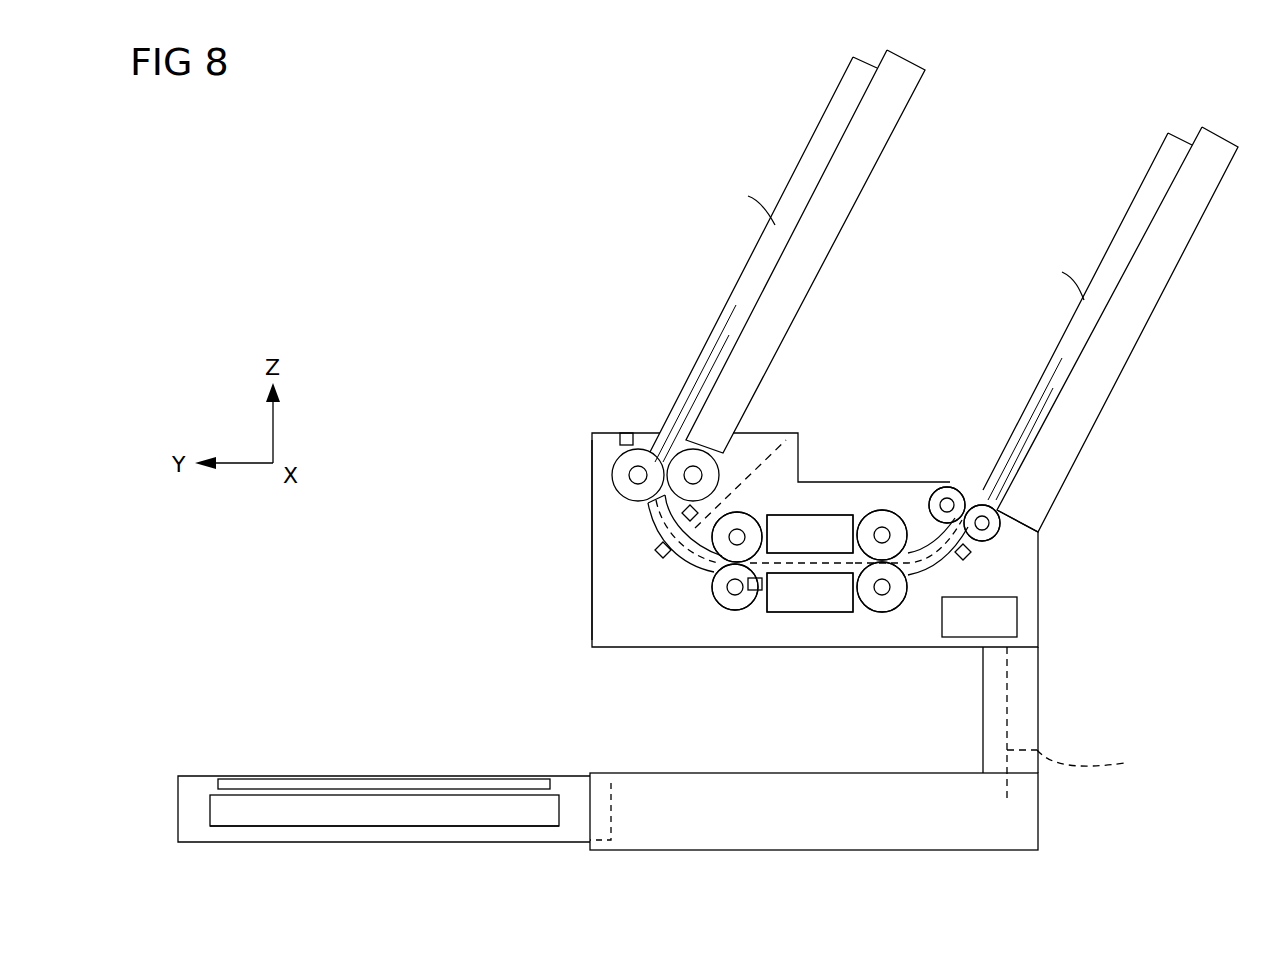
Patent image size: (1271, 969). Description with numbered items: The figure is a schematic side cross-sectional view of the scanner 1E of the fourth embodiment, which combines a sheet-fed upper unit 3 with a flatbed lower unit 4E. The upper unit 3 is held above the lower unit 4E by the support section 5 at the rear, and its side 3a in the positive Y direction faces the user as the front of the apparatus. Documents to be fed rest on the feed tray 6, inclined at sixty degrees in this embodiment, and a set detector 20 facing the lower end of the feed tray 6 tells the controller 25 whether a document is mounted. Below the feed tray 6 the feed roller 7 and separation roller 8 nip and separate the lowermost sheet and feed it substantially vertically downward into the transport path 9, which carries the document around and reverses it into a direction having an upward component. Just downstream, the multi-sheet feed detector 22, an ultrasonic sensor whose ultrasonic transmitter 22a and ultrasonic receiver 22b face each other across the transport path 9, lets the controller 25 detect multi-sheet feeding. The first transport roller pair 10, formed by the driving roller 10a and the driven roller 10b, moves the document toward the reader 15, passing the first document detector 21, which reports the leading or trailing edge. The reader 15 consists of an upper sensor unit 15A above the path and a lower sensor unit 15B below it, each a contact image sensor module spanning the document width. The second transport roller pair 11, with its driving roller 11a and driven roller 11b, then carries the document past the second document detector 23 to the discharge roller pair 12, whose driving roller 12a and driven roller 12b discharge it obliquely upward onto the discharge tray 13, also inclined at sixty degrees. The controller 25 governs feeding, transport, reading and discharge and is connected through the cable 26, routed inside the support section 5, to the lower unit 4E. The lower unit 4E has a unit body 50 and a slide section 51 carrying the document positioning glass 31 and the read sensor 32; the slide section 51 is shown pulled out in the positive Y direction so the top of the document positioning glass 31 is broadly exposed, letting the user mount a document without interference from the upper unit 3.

The scanner 1E is at (538, 188).
The upper unit 3 is at (1038, 617).
The side 3a is at (590, 496).
The support section 5 is at (1038, 713).
The feed tray 6 is at (798, 320).
The feed roller 7 is at (692, 458).
The separation roller 8 is at (612, 474).
The transport path 9 is at (786, 440).
The first transport roller pair 10 is at (694, 592).
The driving roller 10a is at (735, 611).
The driven roller 10b is at (714, 545).
The second transport roller pair 11 is at (920, 604).
The driving roller 11a is at (882, 612).
The driven roller 11b is at (882, 510).
The discharge roller pair 12 is at (955, 481).
The driving roller 12a is at (1000, 533).
The driven roller 12b is at (947, 487).
The discharge tray 13 is at (1098, 420).
The reader 15 is at (799, 498).
The upper sensor unit 15A is at (820, 515).
The lower sensor unit 15B is at (810, 612).
The set detector 20 is at (624, 432).
The first document detector 21 is at (755, 591).
The multi-sheet feed detector 22 is at (636, 543).
The ultrasonic transmitter 22a is at (655, 510).
The ultrasonic receiver 22b is at (656, 557).
The second document detector 23 is at (972, 559).
The controller 25 is at (1007, 620).
The cable 26 is at (1084, 723).
The document positioning glass 31 is at (437, 782).
The read sensor 32 is at (337, 812).
The lower unit 4E is at (1038, 815).
The unit body 50 is at (1038, 838).
The slide section 51 is at (207, 773).